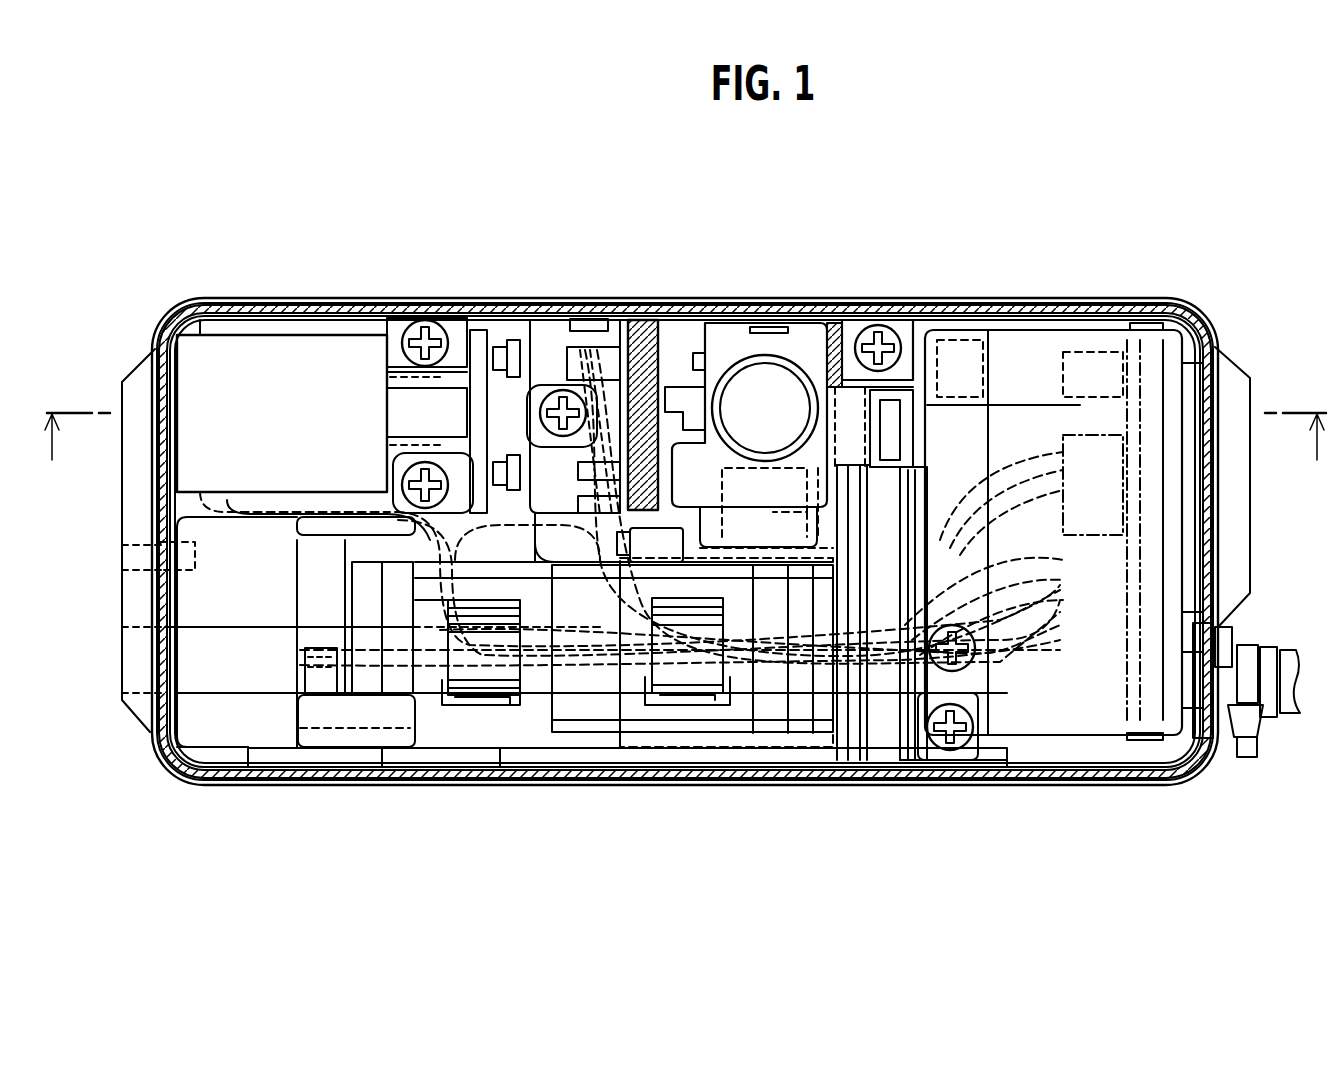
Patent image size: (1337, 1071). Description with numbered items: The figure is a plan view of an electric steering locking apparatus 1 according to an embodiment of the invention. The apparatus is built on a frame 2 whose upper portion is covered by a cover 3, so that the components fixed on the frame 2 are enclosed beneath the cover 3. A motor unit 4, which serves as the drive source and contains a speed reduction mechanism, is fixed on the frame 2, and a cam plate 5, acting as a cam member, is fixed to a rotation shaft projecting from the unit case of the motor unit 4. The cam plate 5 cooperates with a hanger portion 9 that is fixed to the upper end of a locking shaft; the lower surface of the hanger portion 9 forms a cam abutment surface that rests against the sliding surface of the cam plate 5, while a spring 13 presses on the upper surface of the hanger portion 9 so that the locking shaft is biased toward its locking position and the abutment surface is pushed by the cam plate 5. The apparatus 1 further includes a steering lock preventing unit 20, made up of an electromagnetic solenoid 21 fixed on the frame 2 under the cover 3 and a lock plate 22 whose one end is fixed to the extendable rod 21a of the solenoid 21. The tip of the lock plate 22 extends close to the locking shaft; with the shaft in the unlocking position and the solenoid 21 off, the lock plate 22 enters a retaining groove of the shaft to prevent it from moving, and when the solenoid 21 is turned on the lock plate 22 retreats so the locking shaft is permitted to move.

The electric steering locking apparatus 1 is at (300, 248).
The frame 2 is at (55, 720).
The cover 3 is at (153, 360).
The motor unit 4 is at (726, 762).
The cam plate 5 is at (822, 468).
The hanger portion 9 is at (805, 345).
The spring 13 is at (745, 358).
The steering lock preventing unit 20 is at (343, 320).
The electromagnetic solenoid 21 is at (240, 360).
The extendable rod 21a is at (445, 400).
The lock plate 22 is at (684, 400).